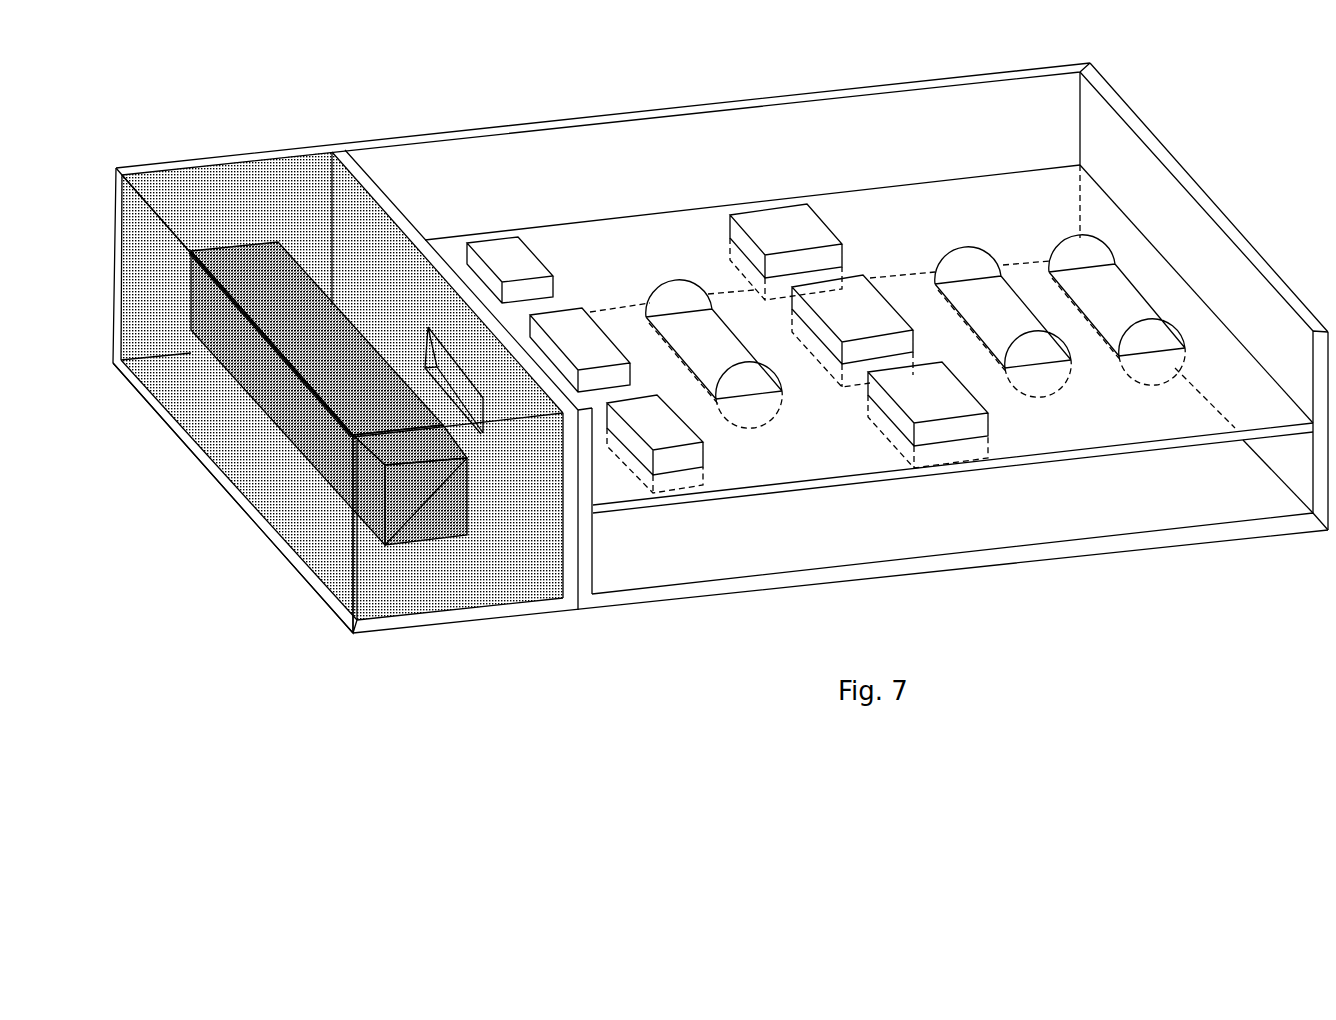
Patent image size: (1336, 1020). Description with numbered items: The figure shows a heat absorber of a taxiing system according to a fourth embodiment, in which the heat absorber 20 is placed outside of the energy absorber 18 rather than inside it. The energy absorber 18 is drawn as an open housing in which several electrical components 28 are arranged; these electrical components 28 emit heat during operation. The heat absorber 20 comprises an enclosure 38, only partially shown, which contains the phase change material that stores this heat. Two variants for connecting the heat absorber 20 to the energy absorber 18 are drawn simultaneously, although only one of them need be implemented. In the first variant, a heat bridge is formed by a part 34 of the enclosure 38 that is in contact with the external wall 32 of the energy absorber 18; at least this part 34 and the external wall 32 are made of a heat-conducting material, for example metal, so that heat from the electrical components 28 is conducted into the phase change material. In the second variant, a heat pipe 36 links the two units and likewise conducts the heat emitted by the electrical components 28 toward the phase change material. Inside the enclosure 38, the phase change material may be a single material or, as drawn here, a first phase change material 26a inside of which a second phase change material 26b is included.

The energy absorber 18 is at (696, 90).
The heat absorber 20 is at (214, 143).
The first phase change material 26a is at (307, 518).
The second phase change material 26b is at (237, 343).
The electrical components 28 is at (1100, 288).
The external wall 32 is at (585, 572).
The part of the enclosure 34 is at (570, 550).
The heat pipe 36 is at (428, 327).
The enclosure 38 is at (395, 623).